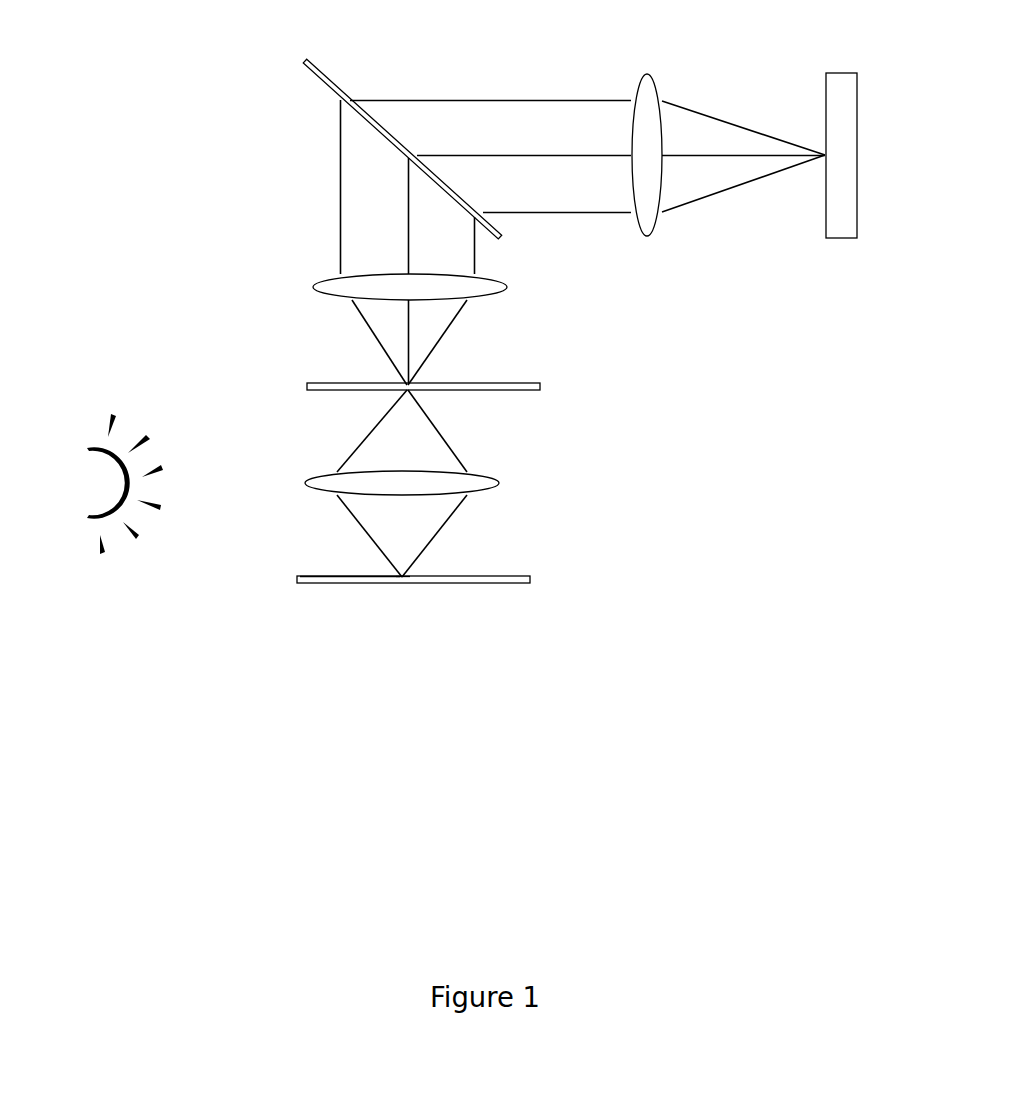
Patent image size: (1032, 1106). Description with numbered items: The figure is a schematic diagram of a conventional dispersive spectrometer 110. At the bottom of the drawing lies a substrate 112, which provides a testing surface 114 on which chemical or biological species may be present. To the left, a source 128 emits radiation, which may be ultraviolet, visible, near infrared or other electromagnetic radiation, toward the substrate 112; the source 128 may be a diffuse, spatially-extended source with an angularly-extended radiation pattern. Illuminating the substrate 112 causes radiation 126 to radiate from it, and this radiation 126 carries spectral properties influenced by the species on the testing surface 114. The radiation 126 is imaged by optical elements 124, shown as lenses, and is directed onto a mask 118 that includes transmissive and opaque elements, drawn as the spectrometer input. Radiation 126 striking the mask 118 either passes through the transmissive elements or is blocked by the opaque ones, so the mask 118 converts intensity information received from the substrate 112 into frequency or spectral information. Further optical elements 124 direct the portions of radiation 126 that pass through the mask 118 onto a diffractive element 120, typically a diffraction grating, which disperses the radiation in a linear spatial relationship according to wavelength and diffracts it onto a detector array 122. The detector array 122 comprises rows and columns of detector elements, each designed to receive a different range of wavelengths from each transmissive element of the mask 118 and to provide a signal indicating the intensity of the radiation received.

The dispersive spectrometer 110 is at (538, 40).
The substrate 112 is at (538, 580).
The testing surface 114 is at (325, 573).
The mask 118 is at (545, 387).
The diffractive element 120 is at (301, 66).
The detector array 122 is at (860, 73).
The optical elements 124 is at (642, 237).
The radiation 126 is at (392, 560).
The source 128 is at (100, 484).